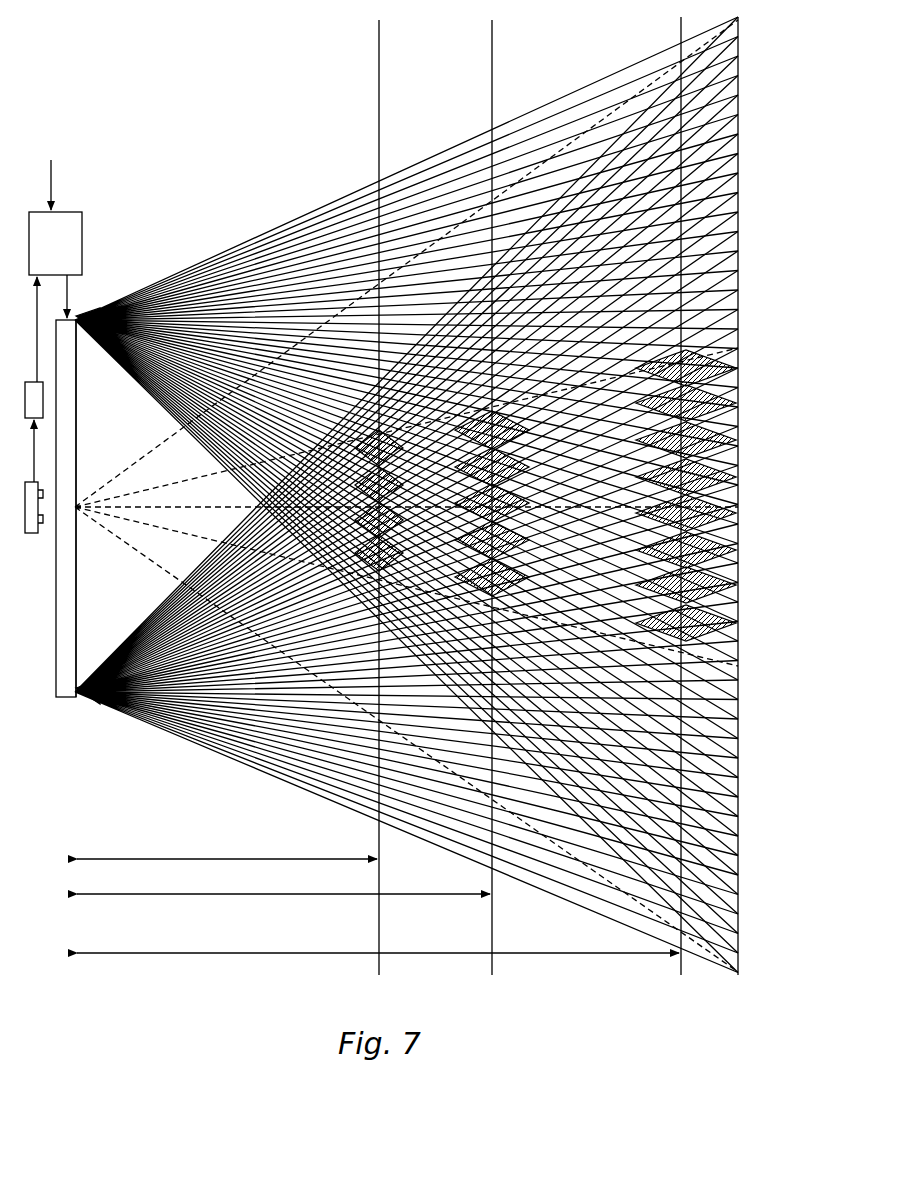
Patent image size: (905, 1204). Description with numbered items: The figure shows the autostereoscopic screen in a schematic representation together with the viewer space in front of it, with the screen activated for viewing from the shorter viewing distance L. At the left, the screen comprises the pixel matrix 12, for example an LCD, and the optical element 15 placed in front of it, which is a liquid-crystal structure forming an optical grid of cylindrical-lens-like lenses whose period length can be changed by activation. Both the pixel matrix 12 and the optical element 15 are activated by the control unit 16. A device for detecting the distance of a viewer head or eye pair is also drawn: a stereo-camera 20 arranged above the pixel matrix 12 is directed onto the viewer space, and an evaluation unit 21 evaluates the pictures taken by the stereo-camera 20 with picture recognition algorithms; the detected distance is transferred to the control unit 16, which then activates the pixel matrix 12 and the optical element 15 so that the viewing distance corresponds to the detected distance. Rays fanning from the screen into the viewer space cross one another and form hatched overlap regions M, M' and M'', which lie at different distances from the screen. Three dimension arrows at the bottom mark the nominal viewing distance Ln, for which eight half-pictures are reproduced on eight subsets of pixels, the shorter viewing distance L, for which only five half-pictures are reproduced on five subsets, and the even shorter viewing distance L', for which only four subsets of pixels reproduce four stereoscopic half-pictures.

The pixel matrix 12 is at (57, 652).
The optical element 15 is at (76, 570).
The control unit 16 is at (82, 238).
The stereo-camera 20 is at (32, 533).
The evaluation unit 21 is at (43, 396).
The overlap regions at distance Ln M is at (669, 493).
The overlap regions at distance L M' is at (514, 506).
The overlap regions at distance L' M'' is at (359, 499).
The viewing distance L is at (283, 877).
The viewing distance L' is at (227, 838).
The nominal viewing distance Ln is at (500, 952).